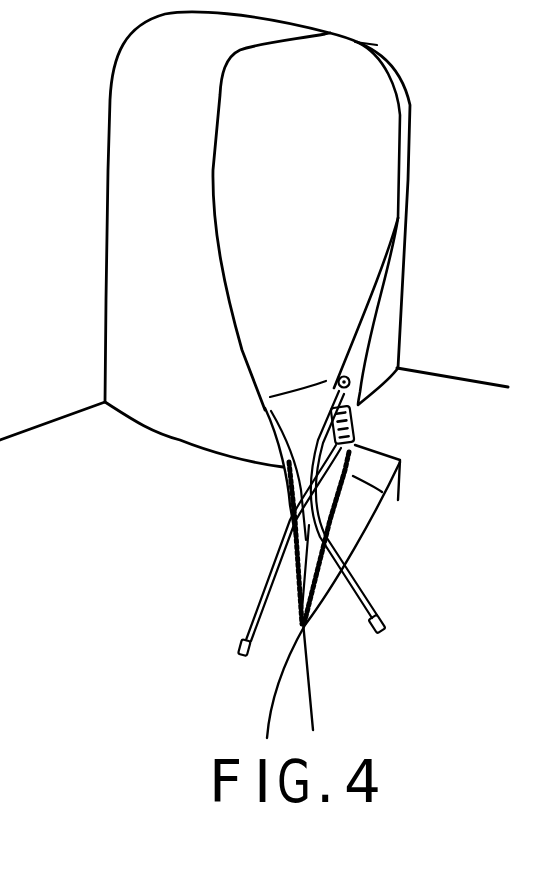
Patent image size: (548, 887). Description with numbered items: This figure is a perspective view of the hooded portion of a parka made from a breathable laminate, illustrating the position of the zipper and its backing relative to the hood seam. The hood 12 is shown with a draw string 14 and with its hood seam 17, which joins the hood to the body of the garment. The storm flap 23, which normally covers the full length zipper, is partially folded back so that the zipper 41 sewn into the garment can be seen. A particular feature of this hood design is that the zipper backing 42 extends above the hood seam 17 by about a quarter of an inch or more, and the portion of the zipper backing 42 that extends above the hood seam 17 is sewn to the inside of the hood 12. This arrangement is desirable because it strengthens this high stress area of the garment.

The hood 12 is at (137, 165).
The hood seam 17 is at (177, 440).
The zipper backing 42 is at (354, 436).
The zipper 41 is at (367, 506).
The storm flap 23 is at (374, 506).
The draw string 14 is at (253, 605).